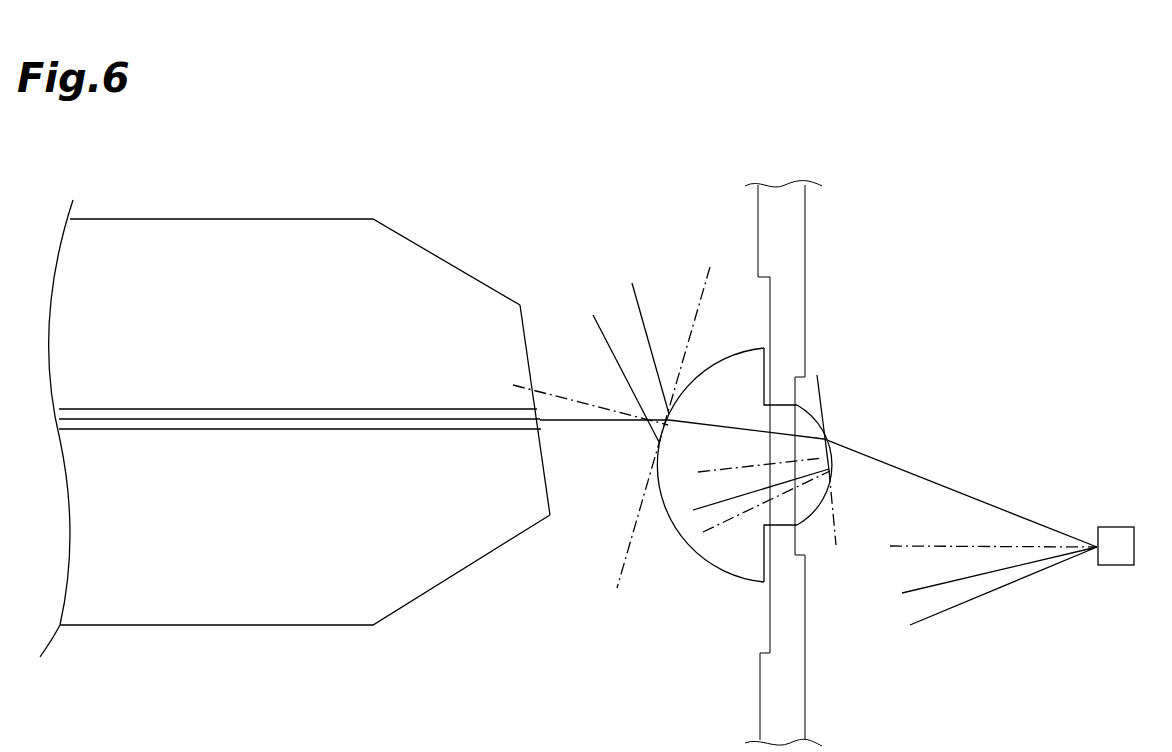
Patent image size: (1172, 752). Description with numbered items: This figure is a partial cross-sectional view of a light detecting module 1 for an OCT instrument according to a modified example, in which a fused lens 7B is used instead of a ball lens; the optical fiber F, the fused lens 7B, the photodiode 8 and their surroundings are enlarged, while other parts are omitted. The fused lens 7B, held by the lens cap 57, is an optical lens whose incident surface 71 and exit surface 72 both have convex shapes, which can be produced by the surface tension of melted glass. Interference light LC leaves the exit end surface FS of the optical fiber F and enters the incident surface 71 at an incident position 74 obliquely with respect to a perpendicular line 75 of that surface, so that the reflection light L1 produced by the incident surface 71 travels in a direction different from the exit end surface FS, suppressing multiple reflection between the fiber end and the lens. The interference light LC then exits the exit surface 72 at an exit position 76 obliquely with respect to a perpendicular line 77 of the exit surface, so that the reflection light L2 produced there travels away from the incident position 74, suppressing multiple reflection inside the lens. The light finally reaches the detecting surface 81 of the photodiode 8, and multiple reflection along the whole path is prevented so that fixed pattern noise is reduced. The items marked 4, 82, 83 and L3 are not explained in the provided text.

The light detecting module 1 is at (962, 238).
The prism / light guide body 4 is at (218, 219).
The optical fiber F is at (225, 430).
The perpendicular line of the incident surface 75 is at (558, 402).
The exit end surface FS is at (545, 424).
The interference light LC is at (590, 412).
The reflection light L1 is at (641, 315).
The incident position 74 is at (705, 418).
The incident surface 71 is at (664, 514).
The fused lens 7B is at (668, 517).
The perpendicular line of the exit surface 77 is at (718, 458).
The lens cap 57 is at (805, 250).
The exit surface 72 is at (831, 410).
The exit position 76 is at (852, 448).
The reflection light L2 is at (803, 522).
The optical axis of light emitter 83 is at (933, 547).
The third axis line L3 is at (965, 600).
The photodiode 8 is at (1122, 527).
The detecting surface 81 is at (1095, 537).
The substrate 82 is at (1097, 552).